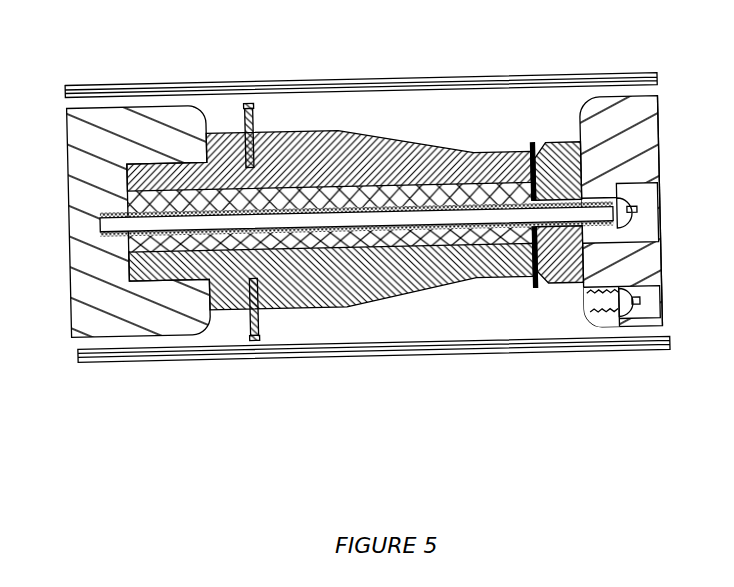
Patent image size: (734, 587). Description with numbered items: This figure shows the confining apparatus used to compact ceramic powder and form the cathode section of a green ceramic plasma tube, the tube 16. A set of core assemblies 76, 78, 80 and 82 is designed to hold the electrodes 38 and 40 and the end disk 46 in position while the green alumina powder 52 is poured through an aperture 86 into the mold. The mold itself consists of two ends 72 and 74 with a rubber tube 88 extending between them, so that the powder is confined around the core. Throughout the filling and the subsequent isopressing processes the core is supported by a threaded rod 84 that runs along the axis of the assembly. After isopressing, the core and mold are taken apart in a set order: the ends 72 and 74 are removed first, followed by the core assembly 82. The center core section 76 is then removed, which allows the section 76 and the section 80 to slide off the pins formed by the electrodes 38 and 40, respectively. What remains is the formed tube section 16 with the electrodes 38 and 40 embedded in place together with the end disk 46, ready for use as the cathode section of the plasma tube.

The tube 16 is at (379, 268).
The electrode 38 is at (252, 96).
The electrode 40 is at (254, 340).
The end disk 46 is at (536, 147).
The green alumina powder 52 is at (356, 227).
The mold end 72 is at (81, 145).
The mold end 74 is at (652, 269).
The center core section 76 is at (324, 142).
The core assembly 78 is at (158, 236).
The core section 80 is at (315, 289).
The core assembly 82 is at (662, 137).
The threaded rod 84 is at (392, 216).
The aperture 86 is at (604, 312).
The rubber tube 88 is at (98, 84).